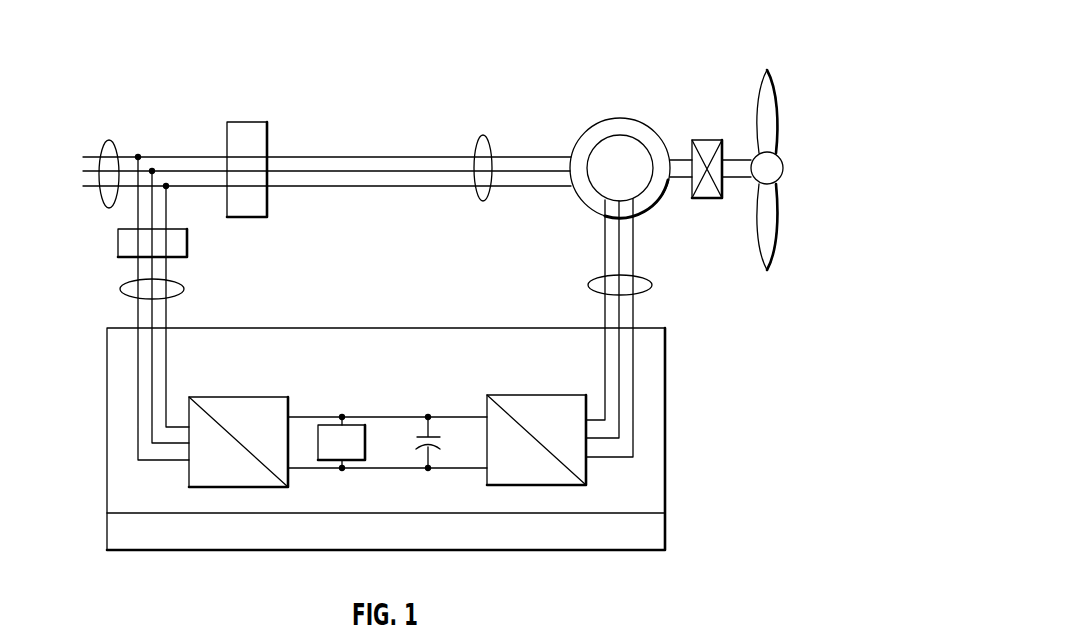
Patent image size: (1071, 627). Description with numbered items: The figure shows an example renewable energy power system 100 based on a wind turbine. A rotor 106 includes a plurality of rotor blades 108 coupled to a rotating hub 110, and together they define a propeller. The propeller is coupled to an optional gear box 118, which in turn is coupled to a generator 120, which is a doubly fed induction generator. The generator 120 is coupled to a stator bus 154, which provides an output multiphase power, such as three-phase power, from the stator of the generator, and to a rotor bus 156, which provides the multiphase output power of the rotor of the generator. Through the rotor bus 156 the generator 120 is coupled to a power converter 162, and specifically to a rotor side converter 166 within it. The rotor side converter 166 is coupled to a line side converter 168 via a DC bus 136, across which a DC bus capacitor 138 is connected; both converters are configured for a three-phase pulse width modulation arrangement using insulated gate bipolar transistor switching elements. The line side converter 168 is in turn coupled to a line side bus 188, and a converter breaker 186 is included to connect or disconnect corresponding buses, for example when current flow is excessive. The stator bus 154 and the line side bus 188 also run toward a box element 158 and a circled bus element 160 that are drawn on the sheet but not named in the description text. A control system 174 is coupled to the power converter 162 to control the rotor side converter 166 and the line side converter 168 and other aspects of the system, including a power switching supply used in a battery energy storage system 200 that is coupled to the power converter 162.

The renewable energy power system 100 is at (384, 85).
The rotor 106 is at (827, 60).
The rotor blades 108 is at (776, 126).
The rotating hub 110 is at (785, 170).
The gear box 118 is at (708, 140).
The generator 120 is at (620, 118).
The DC bus 136 is at (432, 417).
The DC bus capacitor 138 is at (426, 452).
The stator bus 154 is at (490, 146).
The rotor bus 156 is at (651, 283).
The transformer 158 is at (267, 130).
The grid bus 160 is at (116, 148).
The power converter 162 is at (665, 400).
The rotor side converter 166 is at (586, 468).
The line side converter 168 is at (189, 475).
The control system 174 is at (665, 527).
The converter breaker 186 is at (118, 240).
The line side bus 188 is at (118, 288).
The battery energy storage system 200 is at (356, 425).